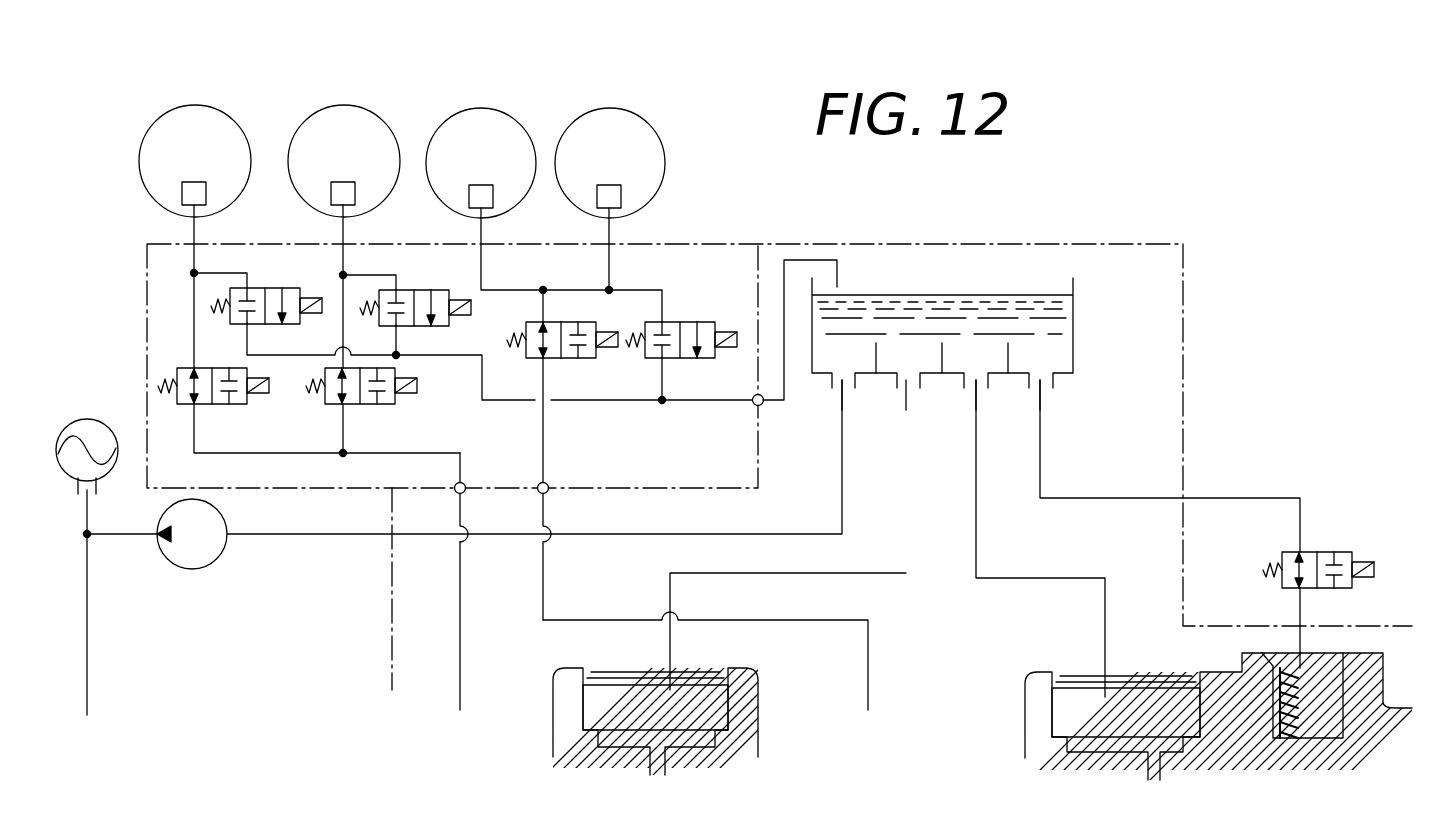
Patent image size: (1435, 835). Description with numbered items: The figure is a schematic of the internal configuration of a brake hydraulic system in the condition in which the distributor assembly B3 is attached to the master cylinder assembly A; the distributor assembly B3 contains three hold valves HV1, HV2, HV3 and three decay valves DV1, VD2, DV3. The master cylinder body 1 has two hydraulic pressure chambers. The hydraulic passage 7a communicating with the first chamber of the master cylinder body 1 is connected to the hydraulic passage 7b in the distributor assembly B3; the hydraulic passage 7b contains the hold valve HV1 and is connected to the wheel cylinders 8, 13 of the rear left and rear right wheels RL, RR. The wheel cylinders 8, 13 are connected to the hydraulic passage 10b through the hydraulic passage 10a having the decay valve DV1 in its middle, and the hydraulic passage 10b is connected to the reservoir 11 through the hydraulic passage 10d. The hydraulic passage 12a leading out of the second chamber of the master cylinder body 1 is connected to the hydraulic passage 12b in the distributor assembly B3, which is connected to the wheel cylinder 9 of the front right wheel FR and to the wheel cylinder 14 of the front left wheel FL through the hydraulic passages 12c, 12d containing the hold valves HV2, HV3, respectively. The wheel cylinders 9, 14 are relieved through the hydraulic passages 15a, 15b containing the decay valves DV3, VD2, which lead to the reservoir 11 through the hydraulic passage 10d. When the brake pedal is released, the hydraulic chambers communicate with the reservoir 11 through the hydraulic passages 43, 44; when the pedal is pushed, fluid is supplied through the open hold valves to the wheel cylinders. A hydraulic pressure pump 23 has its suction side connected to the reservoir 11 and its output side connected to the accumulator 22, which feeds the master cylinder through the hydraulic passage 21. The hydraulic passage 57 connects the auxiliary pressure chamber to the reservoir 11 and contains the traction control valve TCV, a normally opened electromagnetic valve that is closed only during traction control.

The master cylinder body 1 is at (762, 690).
The hydraulic passage 7a is at (545, 565).
The hydraulic passage 7b is at (546, 472).
The wheel cylinder 8 is at (469, 200).
The wheel cylinder 9 is at (331, 197).
The hydraulic passage 10a is at (663, 300).
The hydraulic passage 10b is at (710, 406).
The hydraulic passage 10d is at (806, 258).
The reservoir 11 is at (1074, 336).
The hydraulic passage 12a is at (459, 614).
The hydraulic passage 12b is at (464, 466).
The hydraulic passage 12c is at (343, 440).
The hydraulic passage 12d is at (197, 438).
The wheel cylinder 13 is at (598, 201).
The wheel cylinder 14 is at (182, 197).
The hydraulic passage 15a is at (389, 274).
The hydraulic passage 15b is at (243, 272).
The hydraulic passage 21 is at (88, 652).
The accumulator 22 is at (110, 428).
The hydraulic pressure pump 23 is at (228, 546).
The hydraulic passage 43 is at (1103, 634).
The hydraulic passage 44 is at (668, 587).
The hydraulic passage 57 is at (1220, 498).
The master cylinder assembly A is at (1188, 318).
The distributor assembly B3 is at (886, 243).
The traction control valve TCV is at (1318, 556).
The hold valve HV1 is at (562, 355).
The hold valve HV2 is at (361, 403).
The hold valve HV3 is at (213, 403).
The decay valve DV1 is at (681, 355).
The decay valve VD2 is at (415, 321).
The decay valve DV3 is at (266, 320).
The front left wheel FL is at (195, 161).
The front right wheel FR is at (344, 161).
The rear left wheel RL is at (481, 163).
The rear right wheel RR is at (610, 163).